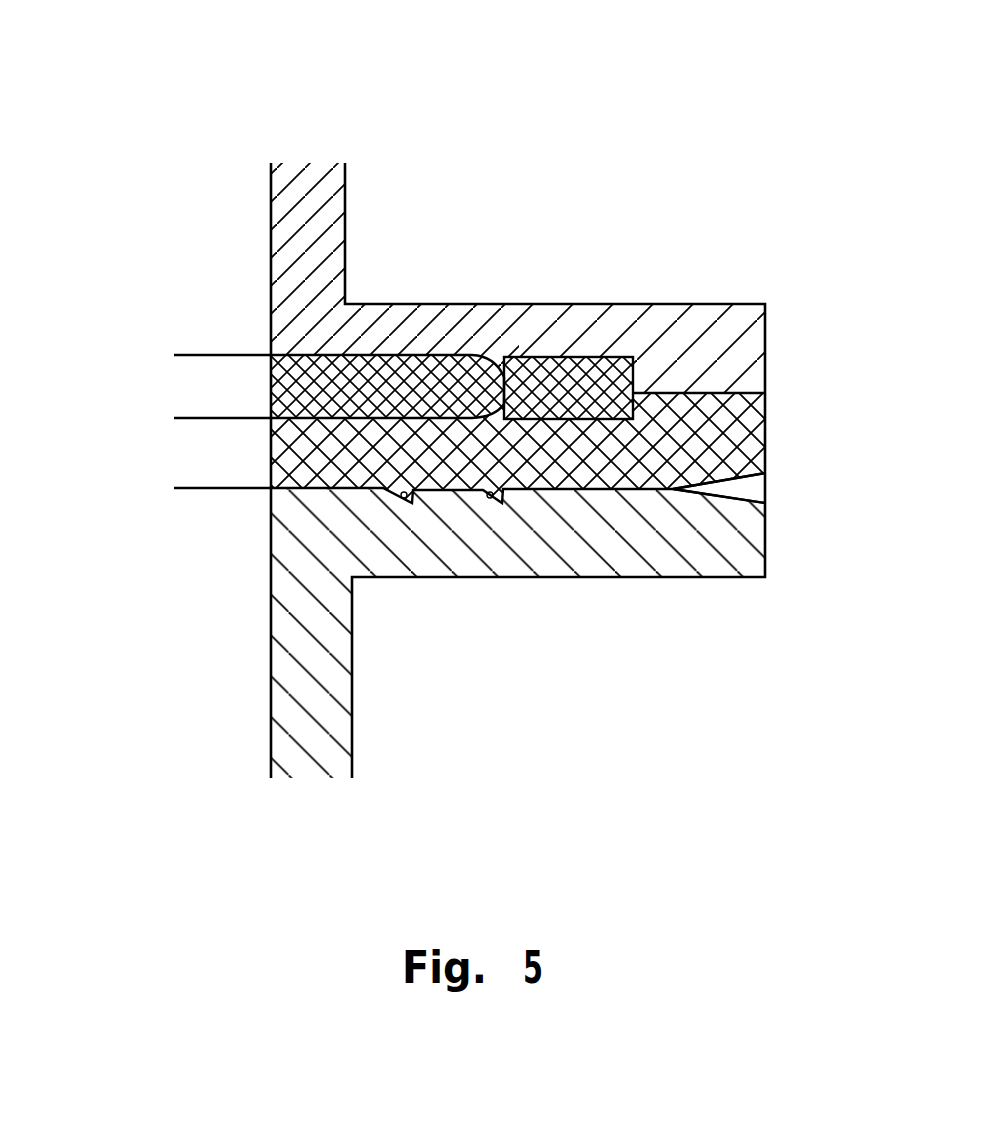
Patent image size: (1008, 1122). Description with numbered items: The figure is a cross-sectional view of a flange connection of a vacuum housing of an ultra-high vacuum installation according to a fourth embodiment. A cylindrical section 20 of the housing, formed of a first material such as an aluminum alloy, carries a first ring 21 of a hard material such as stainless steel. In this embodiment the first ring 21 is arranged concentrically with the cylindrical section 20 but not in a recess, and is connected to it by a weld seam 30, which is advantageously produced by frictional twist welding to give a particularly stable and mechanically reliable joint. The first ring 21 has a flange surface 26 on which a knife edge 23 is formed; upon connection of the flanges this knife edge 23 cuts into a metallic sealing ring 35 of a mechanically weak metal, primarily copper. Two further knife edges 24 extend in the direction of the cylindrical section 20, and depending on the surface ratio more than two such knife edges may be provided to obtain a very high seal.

The cylindrical section 20 is at (312, 697).
The first ring 21 is at (402, 442).
The knife edge 23 is at (492, 410).
The knife edges 24 is at (407, 497).
The flange surface 26 is at (699, 389).
The weld seam 30 is at (745, 489).
The sealing ring 35 is at (309, 387).